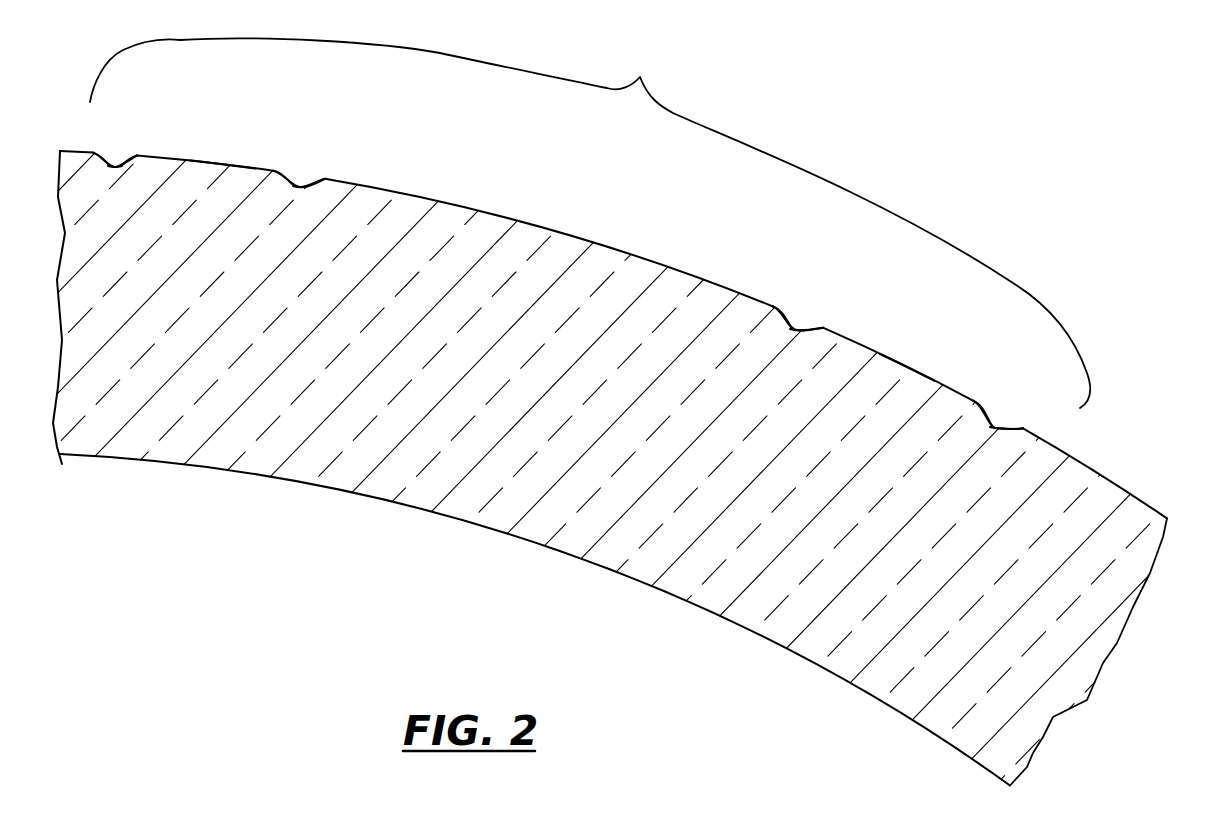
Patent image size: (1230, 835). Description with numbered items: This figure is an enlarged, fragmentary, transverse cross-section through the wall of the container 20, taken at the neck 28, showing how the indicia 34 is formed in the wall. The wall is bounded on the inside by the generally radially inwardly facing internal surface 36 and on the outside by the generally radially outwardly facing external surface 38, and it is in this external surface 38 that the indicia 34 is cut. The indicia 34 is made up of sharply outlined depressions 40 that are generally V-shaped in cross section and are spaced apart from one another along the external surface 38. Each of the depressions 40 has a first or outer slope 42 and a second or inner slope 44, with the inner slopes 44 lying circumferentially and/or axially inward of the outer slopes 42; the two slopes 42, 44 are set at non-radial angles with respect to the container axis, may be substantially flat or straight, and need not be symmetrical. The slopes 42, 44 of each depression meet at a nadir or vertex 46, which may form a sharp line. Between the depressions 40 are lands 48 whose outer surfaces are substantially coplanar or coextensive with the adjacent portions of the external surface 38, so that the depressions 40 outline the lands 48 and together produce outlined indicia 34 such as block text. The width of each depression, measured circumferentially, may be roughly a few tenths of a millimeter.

The container 20 is at (1030, 222).
The neck 28 is at (1140, 633).
The indicia 34 is at (590, 223).
The internal surface 36 is at (810, 663).
The external surface 38 is at (1090, 468).
The depressions 40 is at (116, 150).
The outer slopes 42 is at (102, 158).
The inner slopes 44 is at (133, 158).
The vertices 46 is at (120, 162).
The lands 48 is at (222, 165).